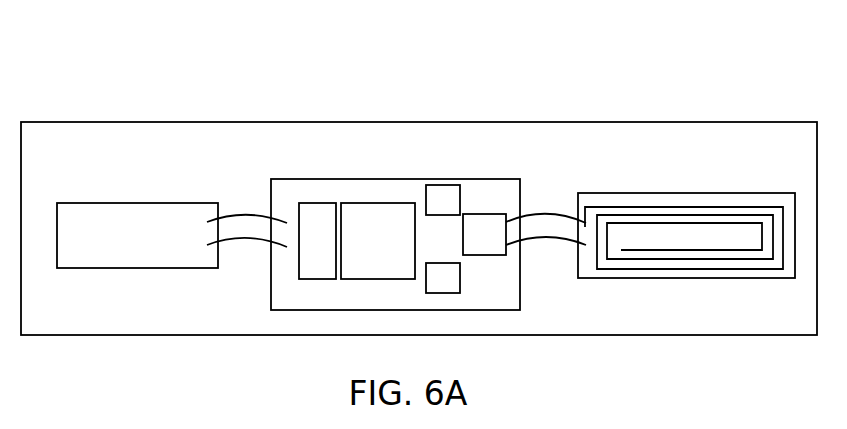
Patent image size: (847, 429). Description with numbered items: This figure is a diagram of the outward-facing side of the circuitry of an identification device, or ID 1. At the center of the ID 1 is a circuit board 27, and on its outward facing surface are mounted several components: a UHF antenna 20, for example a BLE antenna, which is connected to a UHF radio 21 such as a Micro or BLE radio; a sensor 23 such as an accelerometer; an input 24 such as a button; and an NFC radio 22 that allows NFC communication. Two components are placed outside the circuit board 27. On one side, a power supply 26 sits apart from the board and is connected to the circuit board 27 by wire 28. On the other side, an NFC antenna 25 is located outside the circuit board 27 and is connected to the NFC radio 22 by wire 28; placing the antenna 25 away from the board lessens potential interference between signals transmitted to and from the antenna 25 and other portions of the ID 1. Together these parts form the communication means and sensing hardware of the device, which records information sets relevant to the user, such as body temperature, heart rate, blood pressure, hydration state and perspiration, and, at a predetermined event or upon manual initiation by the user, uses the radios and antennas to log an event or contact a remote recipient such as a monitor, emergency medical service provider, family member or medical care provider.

The ID 1 is at (92, 122).
The UHF antenna 20 is at (307, 245).
The UHF radio 21 is at (372, 245).
The NFC radio 22 is at (469, 244).
The sensor 23 is at (432, 210).
The input 24 is at (432, 290).
The NFC antenna 25 is at (626, 200).
The power supply 26 is at (127, 244).
The circuit board 27 is at (487, 179).
The wire 28 is at (240, 214).